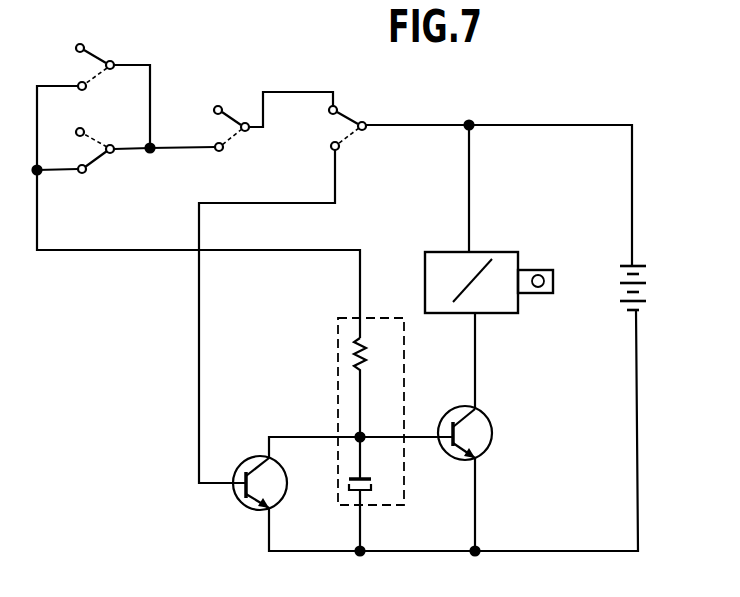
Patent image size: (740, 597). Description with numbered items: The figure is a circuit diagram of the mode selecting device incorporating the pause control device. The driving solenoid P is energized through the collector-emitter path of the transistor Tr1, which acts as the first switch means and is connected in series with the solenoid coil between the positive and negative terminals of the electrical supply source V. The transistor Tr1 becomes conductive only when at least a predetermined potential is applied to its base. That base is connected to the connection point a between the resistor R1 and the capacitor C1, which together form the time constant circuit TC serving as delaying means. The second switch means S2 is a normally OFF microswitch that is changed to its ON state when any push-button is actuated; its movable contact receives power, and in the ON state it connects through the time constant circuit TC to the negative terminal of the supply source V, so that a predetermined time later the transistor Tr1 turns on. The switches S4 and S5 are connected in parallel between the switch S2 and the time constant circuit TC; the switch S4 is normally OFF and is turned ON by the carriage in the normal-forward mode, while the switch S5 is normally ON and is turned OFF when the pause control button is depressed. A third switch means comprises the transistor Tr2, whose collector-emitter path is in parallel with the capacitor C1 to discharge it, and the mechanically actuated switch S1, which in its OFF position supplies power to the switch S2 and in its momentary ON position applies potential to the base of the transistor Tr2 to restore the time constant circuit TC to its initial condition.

The switch S4 is at (96, 58).
The switch S5 is at (102, 156).
The second switch means S2 is at (228, 115).
The switch S1 is at (331, 113).
The driving solenoid P is at (483, 252).
The electrical supply source V is at (620, 286).
The time constant circuit TC is at (383, 318).
The resistor R1 is at (374, 387).
The connection point a is at (369, 425).
The capacitor C1 is at (375, 494).
The transistor Tr2 is at (240, 468).
The first switch means Tr1 is at (492, 430).